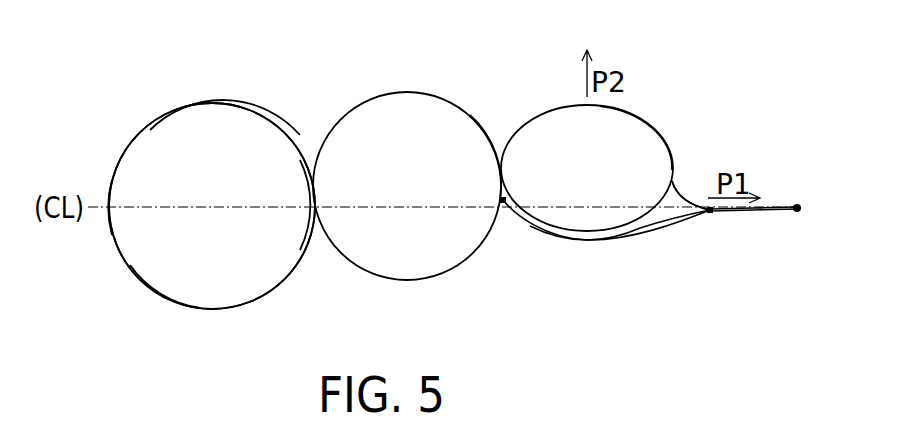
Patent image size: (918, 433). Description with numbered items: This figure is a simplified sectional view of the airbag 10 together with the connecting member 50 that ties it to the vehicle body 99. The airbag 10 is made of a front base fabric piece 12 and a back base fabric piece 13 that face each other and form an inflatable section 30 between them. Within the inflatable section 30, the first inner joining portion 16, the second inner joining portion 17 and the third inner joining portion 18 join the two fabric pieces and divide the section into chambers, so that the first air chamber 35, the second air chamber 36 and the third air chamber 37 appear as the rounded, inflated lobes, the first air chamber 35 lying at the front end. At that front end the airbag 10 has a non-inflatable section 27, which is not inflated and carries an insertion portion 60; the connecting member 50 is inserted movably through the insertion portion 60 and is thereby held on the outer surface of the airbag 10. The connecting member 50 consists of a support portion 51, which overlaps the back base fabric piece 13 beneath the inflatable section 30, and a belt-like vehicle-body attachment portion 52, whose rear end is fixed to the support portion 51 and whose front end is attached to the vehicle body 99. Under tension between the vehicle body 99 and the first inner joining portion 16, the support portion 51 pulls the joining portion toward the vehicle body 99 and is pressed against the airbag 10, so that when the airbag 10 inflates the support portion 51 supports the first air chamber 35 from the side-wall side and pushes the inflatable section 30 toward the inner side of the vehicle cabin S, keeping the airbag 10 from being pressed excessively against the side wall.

The airbag 10 is at (116, 145).
The front base fabric piece 12 is at (145, 128).
The third air chamber 37 is at (226, 135).
The second inner joining portion 17 is at (312, 188).
The third inner joining portion 18 is at (110, 208).
The back base fabric piece 13 is at (153, 291).
The second air chamber 36 is at (408, 115).
The first inner joining portion 16 is at (500, 177).
The vehicle cabin S is at (517, 36).
The inflatable section 30 is at (568, 131).
The first air chamber 35 is at (623, 140).
The non-inflatable section 27 is at (687, 197).
The support portion 51 is at (577, 241).
The connecting member 50 is at (655, 228).
The insertion portion 60 is at (710, 214).
The vehicle-body attachment portion 52 is at (750, 211).
The vehicle body 99 is at (797, 204).